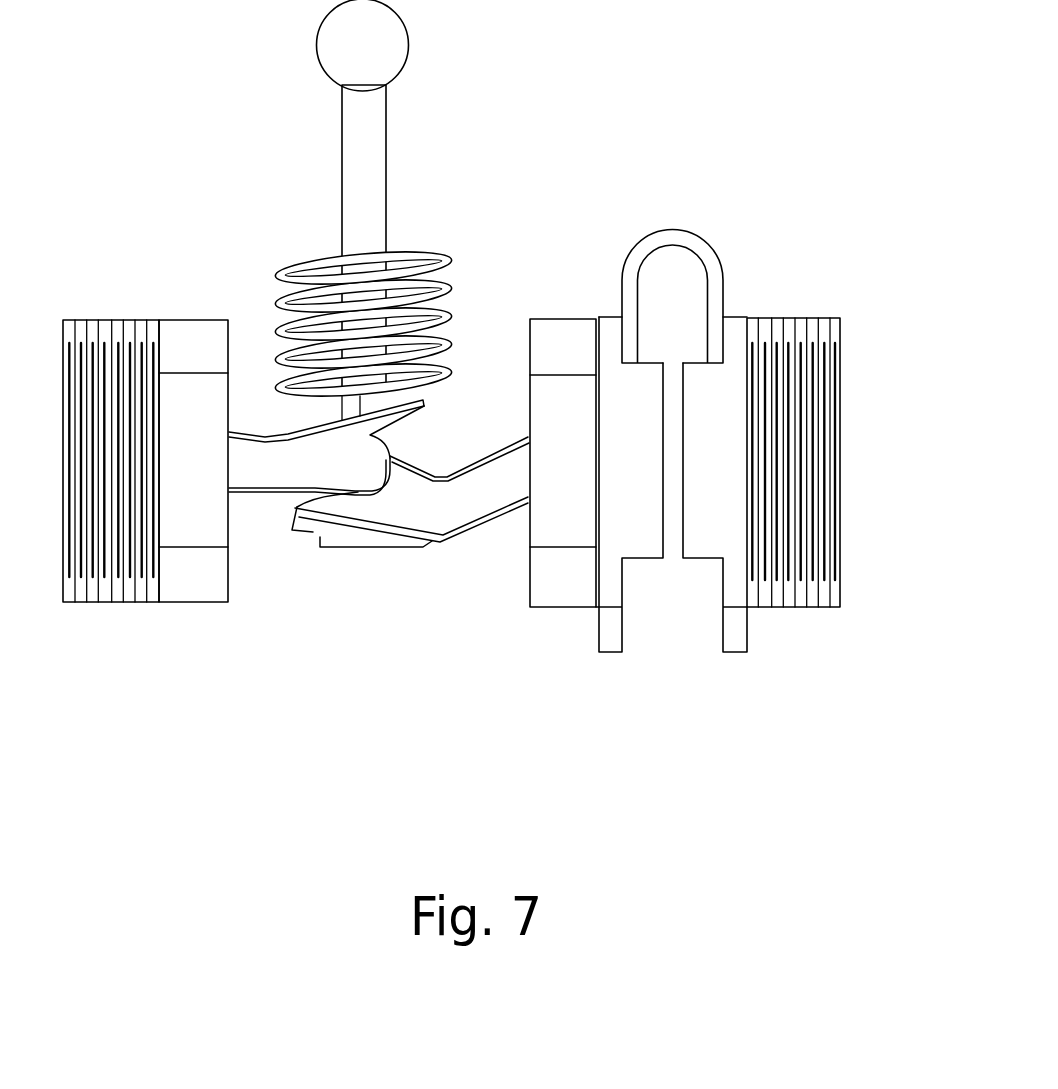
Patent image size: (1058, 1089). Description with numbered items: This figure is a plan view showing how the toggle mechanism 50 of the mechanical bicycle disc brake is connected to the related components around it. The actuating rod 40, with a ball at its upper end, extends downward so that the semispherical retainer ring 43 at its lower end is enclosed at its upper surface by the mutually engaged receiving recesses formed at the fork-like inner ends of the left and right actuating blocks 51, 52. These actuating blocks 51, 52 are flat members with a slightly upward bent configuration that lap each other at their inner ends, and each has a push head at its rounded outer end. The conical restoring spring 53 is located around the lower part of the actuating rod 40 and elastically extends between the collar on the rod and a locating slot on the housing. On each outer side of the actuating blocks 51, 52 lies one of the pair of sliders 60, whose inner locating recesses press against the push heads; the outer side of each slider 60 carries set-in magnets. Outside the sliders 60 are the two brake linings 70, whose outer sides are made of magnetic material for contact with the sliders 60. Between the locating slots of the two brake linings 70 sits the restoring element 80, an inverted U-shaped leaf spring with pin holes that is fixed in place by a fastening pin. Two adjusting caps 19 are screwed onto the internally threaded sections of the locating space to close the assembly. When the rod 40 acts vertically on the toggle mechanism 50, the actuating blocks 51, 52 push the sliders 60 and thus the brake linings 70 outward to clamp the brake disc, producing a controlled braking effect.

The adjusting cap 19 is at (108, 560).
The actuating rod 40 is at (363, 210).
The semispherical retainer ring 43 is at (357, 540).
The toggle mechanism 50 is at (379, 574).
The left actuating block 51 is at (298, 468).
The right actuating block 52 is at (492, 502).
The conical restoring spring 53 is at (418, 268).
The slider 60 is at (195, 575).
The brake lining 70 is at (633, 525).
The restoring element 80 is at (677, 228).